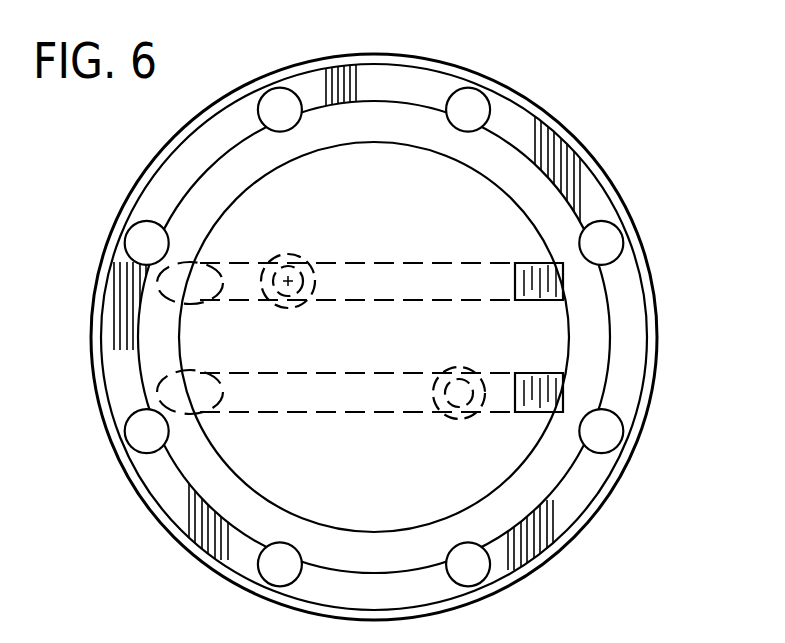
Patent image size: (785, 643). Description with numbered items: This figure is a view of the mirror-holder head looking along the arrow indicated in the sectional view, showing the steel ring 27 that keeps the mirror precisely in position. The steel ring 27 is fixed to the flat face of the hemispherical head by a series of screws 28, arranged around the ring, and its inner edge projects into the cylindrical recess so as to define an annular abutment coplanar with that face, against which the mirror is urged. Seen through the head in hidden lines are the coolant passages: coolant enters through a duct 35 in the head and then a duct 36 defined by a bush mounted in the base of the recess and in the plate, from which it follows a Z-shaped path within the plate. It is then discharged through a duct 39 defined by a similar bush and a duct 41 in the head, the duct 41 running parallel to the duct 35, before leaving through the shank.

The steel ring 27 is at (585, 183).
The screws 28 is at (620, 227).
The duct 35 is at (346, 404).
The duct 36 is at (441, 418).
The duct 39 is at (289, 268).
The duct 41 is at (471, 277).